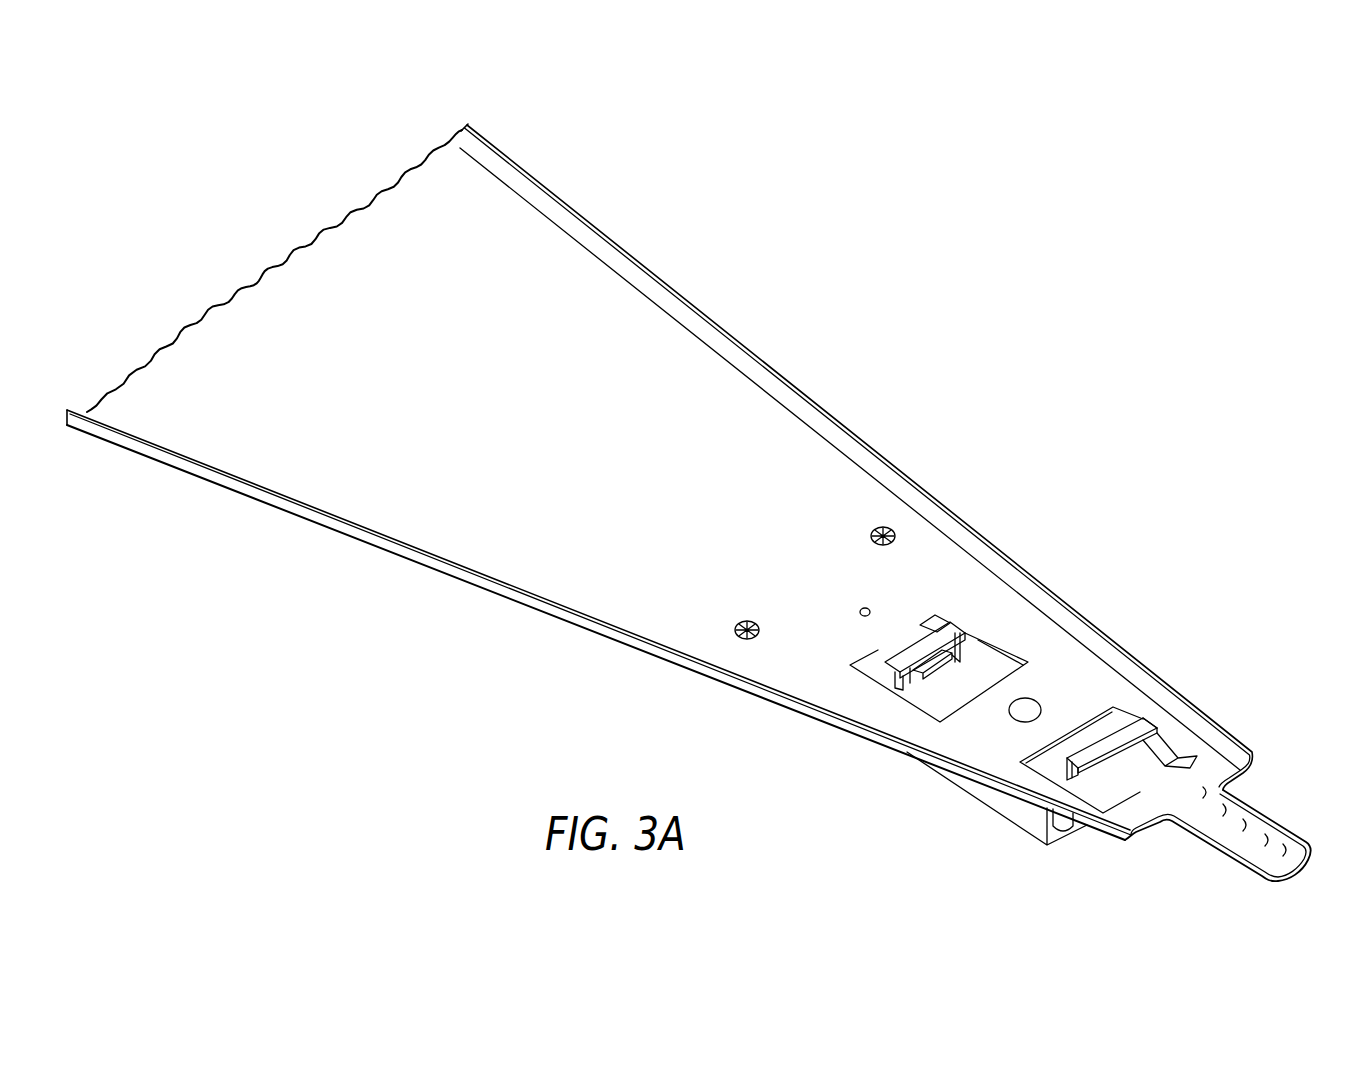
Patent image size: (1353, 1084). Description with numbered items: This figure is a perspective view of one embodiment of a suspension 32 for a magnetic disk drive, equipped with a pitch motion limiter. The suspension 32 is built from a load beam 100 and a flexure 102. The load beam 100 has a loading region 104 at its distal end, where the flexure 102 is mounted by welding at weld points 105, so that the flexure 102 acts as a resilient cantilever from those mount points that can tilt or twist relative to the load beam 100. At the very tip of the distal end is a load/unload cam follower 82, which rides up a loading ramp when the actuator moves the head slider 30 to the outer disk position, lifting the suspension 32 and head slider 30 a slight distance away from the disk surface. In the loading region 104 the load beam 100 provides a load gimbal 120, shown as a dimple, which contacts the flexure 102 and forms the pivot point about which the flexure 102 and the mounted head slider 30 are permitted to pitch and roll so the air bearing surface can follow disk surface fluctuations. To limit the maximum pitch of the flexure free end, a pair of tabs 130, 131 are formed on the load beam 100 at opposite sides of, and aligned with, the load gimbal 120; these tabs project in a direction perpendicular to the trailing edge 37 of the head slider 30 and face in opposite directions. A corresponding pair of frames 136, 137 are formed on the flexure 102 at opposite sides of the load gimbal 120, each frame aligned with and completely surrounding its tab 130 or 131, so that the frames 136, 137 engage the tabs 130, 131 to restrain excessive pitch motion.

The suspension 32 is at (903, 324).
The load beam 100 is at (893, 464).
The head slider 30 is at (1003, 822).
The trailing edge 37 is at (1072, 838).
The load/unload cam follower 82 is at (1293, 837).
The weld points 105 is at (871, 531).
The loading region 104 is at (860, 609).
The load gimbal 120 is at (1040, 700).
The flexure 102 is at (1000, 663).
The tab 130 is at (928, 682).
The frame 136 is at (958, 624).
The tab 131 is at (1180, 745).
The frame 137 is at (1157, 722).